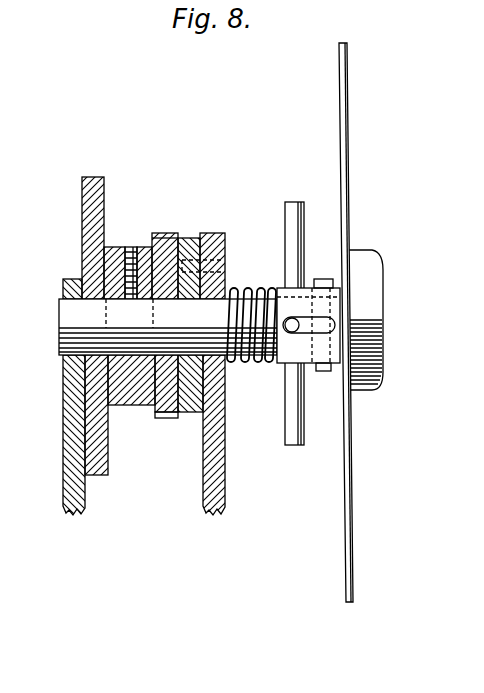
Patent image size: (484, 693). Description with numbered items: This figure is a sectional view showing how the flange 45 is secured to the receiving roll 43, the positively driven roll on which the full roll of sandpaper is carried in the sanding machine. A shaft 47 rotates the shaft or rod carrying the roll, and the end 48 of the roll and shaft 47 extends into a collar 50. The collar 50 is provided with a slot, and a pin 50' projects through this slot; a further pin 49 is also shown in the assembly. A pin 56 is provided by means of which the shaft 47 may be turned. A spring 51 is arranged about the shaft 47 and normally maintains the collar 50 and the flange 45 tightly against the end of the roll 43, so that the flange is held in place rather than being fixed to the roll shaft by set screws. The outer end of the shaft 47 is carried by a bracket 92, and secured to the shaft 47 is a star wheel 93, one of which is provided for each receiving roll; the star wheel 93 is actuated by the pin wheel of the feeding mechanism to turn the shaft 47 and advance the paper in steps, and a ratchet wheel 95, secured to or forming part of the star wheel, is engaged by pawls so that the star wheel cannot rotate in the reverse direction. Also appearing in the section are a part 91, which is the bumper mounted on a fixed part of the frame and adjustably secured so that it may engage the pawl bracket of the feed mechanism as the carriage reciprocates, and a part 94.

The receiving roll 43 is at (364, 389).
The flange 45 is at (347, 516).
The shaft 47 is at (60, 339).
The end of the roll and shaft 48 is at (320, 320).
The pin 49 is at (323, 372).
The collar 50 is at (297, 347).
The pin 50' is at (268, 353).
The spring 51 is at (246, 290).
The pin 56 is at (293, 203).
The bumper 91 is at (227, 486).
The bracket 92 is at (64, 410).
The star wheel 93 is at (97, 476).
The set screw 94 is at (129, 247).
The ratchet wheel 95 is at (161, 413).